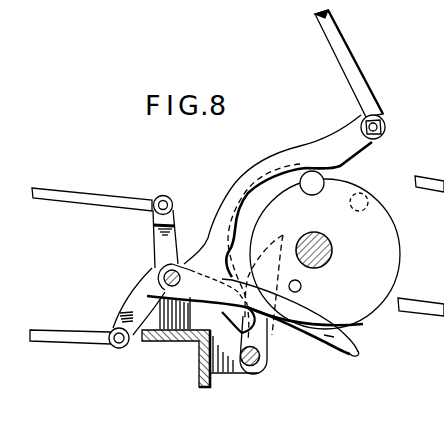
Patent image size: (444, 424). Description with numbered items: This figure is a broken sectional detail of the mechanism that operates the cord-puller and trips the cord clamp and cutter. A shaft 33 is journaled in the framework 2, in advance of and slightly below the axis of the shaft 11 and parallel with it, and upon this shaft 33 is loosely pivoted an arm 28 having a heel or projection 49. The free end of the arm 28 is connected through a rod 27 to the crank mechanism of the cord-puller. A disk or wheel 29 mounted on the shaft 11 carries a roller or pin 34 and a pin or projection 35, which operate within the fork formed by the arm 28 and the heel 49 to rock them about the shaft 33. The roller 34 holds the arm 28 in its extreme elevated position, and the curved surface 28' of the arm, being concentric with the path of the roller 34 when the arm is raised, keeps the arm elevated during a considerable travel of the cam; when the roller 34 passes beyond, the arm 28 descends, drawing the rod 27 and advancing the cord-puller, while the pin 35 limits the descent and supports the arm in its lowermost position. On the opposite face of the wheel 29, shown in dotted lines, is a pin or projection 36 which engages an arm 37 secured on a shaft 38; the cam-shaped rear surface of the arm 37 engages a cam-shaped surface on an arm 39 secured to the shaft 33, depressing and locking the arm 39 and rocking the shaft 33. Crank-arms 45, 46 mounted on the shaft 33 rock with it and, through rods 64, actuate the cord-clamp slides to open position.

The framework 2 is at (183, 341).
The shaft 11 is at (332, 253).
The rod 27 is at (350, 68).
The arm 28 is at (278, 227).
The curved surface 28' is at (264, 257).
The disk or wheel 29 is at (390, 235).
The shaft 33 is at (162, 270).
The roller or pin 34 is at (313, 183).
The pin or projection 35 is at (301, 288).
The pin or projection 36 is at (360, 201).
The arm 37 is at (266, 340).
The shaft 38 is at (251, 367).
The arm 39 is at (229, 313).
The crank-arm 45 is at (125, 310).
The crank-arm 46 is at (153, 229).
The heel or projection 49 is at (352, 351).
The rod 64 is at (108, 191).